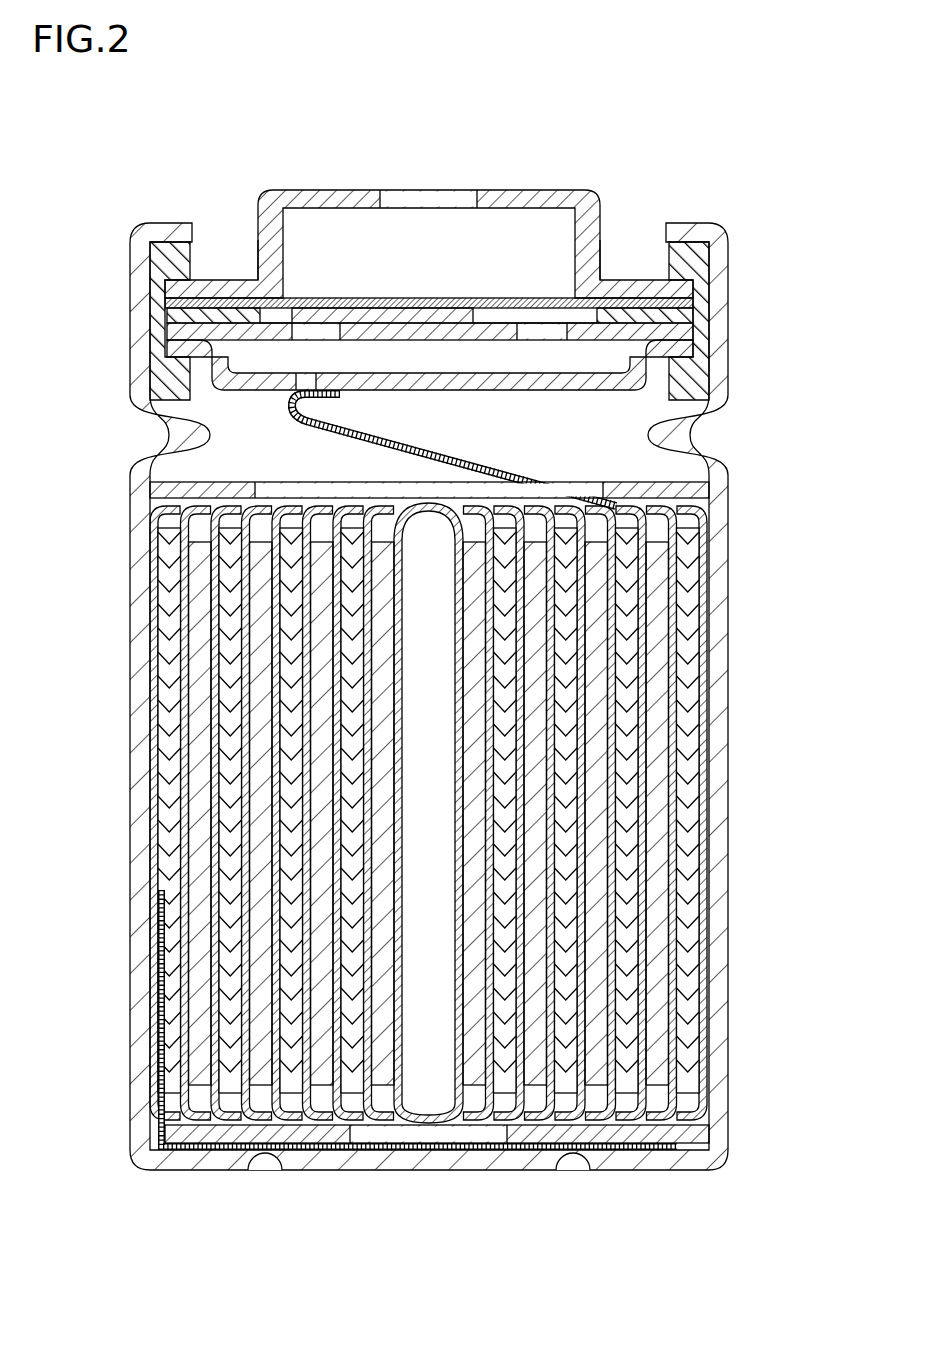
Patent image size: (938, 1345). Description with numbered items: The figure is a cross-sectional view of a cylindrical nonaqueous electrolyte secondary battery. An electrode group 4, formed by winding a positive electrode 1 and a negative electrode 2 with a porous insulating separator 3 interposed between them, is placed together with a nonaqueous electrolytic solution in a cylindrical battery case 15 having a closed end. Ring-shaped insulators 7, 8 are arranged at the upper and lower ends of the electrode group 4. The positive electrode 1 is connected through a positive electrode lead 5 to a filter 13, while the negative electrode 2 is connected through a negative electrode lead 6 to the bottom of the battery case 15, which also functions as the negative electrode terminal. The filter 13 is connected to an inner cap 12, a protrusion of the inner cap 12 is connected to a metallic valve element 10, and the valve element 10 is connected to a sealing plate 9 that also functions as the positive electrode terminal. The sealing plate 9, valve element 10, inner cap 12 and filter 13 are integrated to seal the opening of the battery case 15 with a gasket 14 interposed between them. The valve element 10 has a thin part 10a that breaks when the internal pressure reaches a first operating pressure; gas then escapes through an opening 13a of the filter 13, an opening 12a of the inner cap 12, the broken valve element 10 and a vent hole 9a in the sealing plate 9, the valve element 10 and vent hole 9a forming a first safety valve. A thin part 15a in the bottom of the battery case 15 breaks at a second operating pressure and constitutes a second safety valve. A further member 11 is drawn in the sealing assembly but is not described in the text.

The positive electrode 1 is at (660, 835).
The negative electrode 2 is at (690, 790).
The separator 3 is at (703, 752).
The electrode group 4 is at (492, 813).
The positive electrode lead 5 is at (432, 464).
The negative electrode lead 6 is at (440, 1152).
The insulator 7 is at (712, 492).
The insulator 8 is at (712, 1136).
The sealing plate 9 is at (429, 205).
The vent hole 9a is at (428, 205).
The valve element 10 is at (429, 210).
The thin part 10a is at (557, 303).
The lower valve body 11 is at (700, 312).
The inner cap 12 is at (430, 226).
The opening 12a is at (318, 328).
The filter 13 is at (366, 401).
The opening 13a is at (305, 388).
The gasket 14 is at (706, 267).
The battery case 15 is at (390, 741).
The thin part 15a is at (573, 1170).